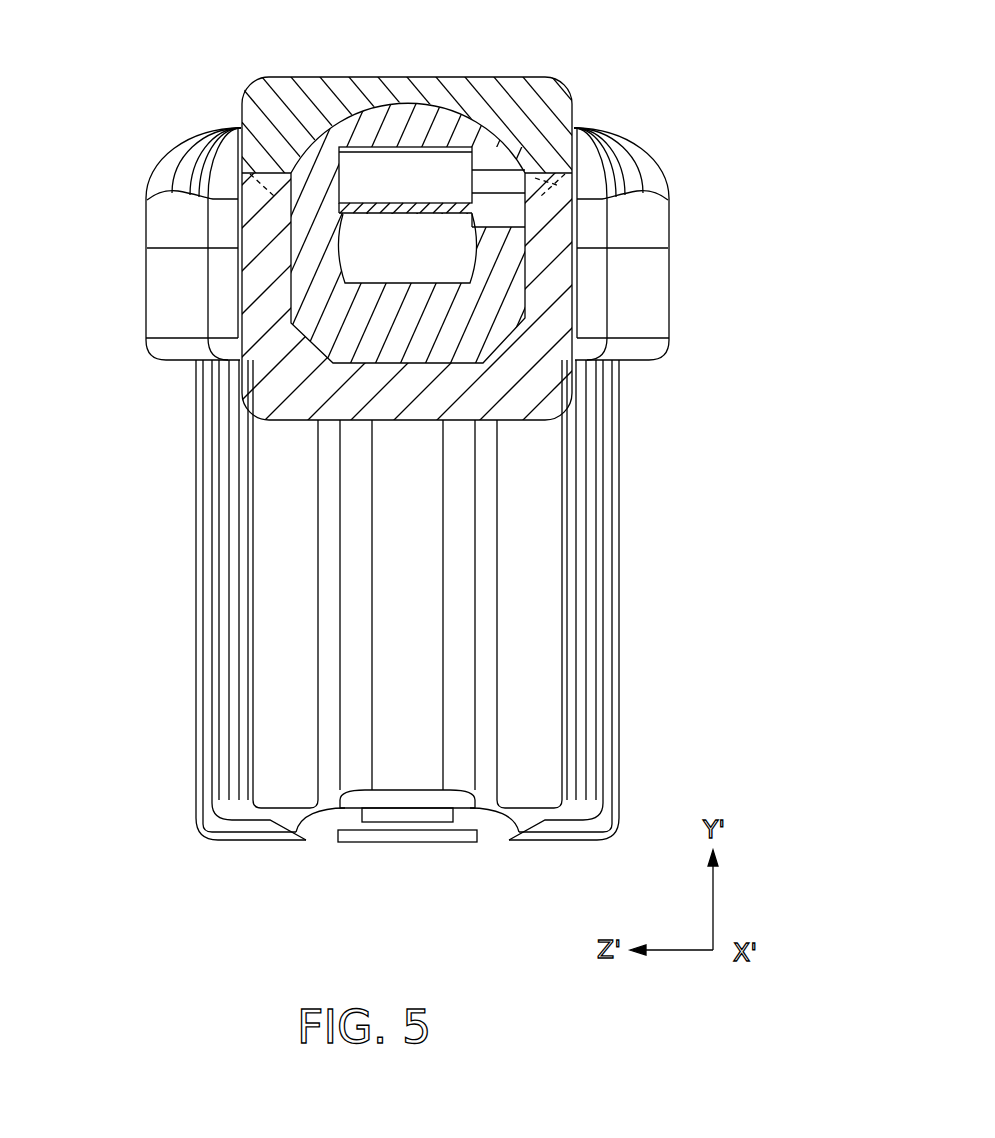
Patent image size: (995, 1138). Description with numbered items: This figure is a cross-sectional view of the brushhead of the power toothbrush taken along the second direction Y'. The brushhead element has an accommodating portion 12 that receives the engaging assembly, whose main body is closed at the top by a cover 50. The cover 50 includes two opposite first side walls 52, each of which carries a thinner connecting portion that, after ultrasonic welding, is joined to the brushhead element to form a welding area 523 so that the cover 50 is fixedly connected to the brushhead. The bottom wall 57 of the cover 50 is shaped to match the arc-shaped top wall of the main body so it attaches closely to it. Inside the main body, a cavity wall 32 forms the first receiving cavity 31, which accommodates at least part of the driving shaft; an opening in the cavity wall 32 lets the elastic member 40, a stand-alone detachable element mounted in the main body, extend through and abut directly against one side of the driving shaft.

The cover 50 is at (470, 92).
The bottom wall 57 is at (408, 102).
The first side wall 52 is at (240, 130).
The welding area 523 is at (286, 177).
The accommodating portion 12 is at (562, 177).
The first receiving cavity 31 is at (450, 267).
The cavity wall 32 is at (477, 247).
The elastic member 40 is at (373, 208).